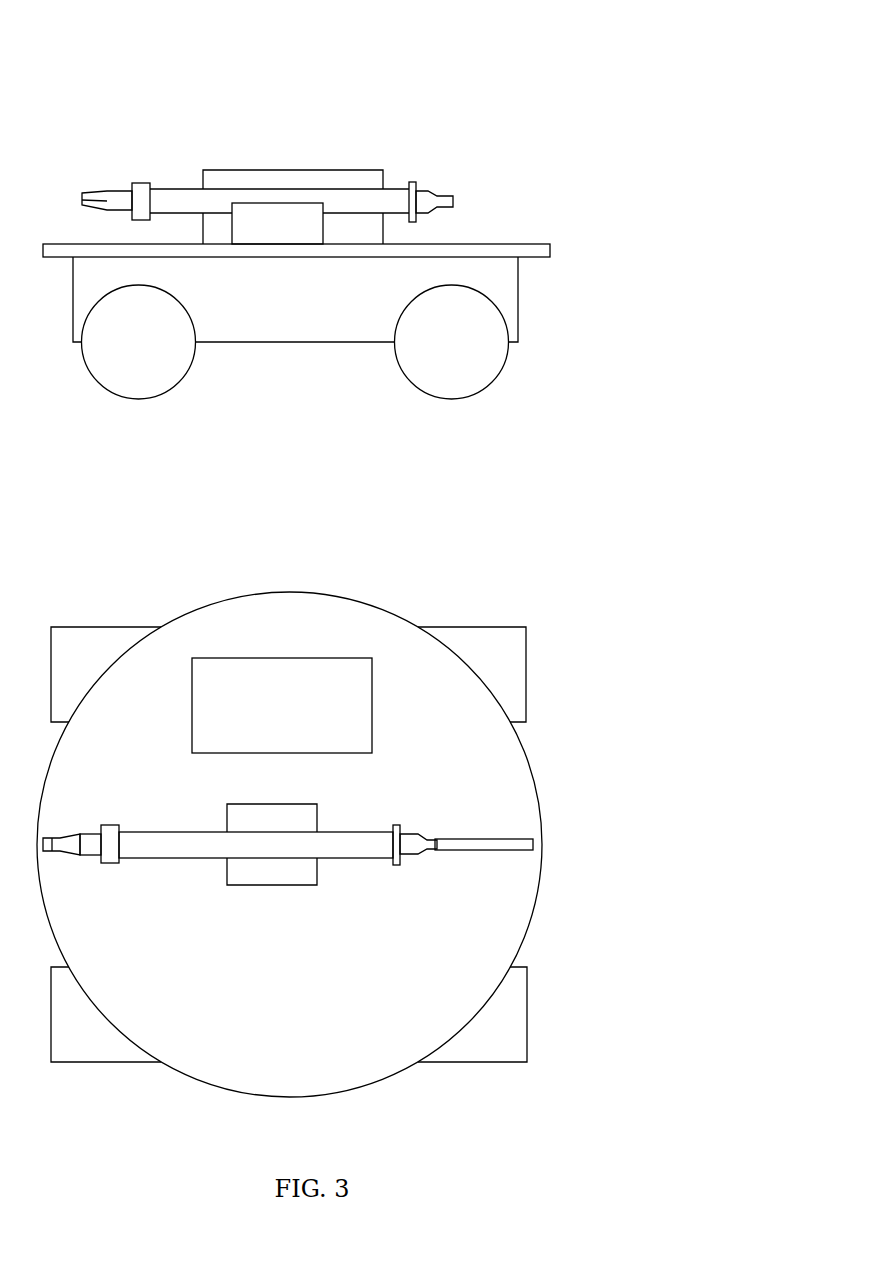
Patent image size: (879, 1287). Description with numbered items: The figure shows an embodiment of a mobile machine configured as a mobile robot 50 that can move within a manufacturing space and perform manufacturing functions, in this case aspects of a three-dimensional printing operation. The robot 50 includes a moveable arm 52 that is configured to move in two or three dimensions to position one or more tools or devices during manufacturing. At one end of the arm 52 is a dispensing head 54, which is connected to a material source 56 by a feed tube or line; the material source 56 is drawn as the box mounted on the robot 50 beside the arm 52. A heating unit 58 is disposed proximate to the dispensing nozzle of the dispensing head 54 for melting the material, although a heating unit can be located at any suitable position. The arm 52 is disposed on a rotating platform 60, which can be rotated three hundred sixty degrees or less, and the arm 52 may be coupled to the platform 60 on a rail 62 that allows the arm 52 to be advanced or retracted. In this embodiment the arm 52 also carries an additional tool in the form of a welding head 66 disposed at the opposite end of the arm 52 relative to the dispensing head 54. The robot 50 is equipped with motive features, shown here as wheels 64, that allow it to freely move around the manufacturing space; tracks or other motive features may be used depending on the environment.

The mobile robot 50 is at (502, 34).
The moveable arm 52 is at (180, 187).
The dispensing head 54 is at (97, 210).
The material source 56 is at (362, 228).
The heating unit 58 is at (142, 182).
The rotating platform 60 is at (523, 252).
The rail 62 is at (482, 843).
The wheels 64 is at (488, 642).
The welding head 66 is at (408, 837).